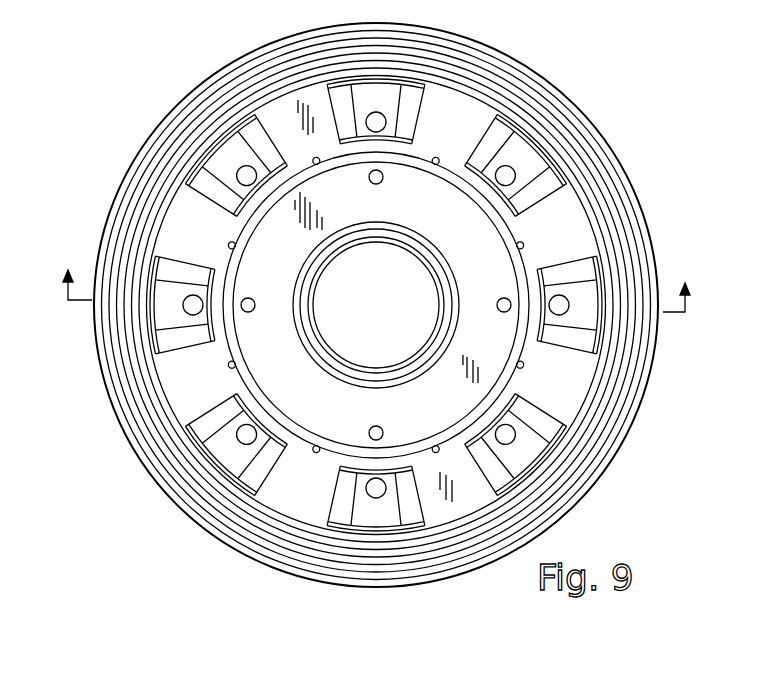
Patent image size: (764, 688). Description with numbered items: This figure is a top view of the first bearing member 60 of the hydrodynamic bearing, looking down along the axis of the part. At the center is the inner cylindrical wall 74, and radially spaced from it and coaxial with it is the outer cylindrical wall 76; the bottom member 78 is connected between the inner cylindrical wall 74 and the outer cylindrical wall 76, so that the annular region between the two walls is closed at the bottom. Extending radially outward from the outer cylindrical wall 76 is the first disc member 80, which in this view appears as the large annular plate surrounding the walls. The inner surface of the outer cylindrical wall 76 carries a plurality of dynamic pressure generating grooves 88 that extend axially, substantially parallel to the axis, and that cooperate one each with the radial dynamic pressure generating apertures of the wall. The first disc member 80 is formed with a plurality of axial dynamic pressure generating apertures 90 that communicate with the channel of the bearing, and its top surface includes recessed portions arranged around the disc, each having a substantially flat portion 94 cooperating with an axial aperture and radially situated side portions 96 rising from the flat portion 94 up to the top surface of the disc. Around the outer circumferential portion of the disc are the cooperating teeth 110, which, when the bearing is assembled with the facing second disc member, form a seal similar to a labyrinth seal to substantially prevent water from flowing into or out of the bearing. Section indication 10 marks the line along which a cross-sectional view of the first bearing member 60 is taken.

The first bearing member 60 is at (109, 137).
The section line 10 is at (379, 279).
The inner cylindrical wall 74 is at (437, 268).
The outer cylindrical wall 76 is at (523, 366).
The bottom member 78 is at (345, 417).
The first disc member 80 is at (205, 236).
The dynamic pressure generating grooves 88 is at (443, 165).
The axial dynamic pressure generating apertures 90 is at (553, 157).
The substantially flat portion 94 is at (532, 153).
The side portions 96 is at (502, 117).
The cooperating teeth 110 is at (607, 428).